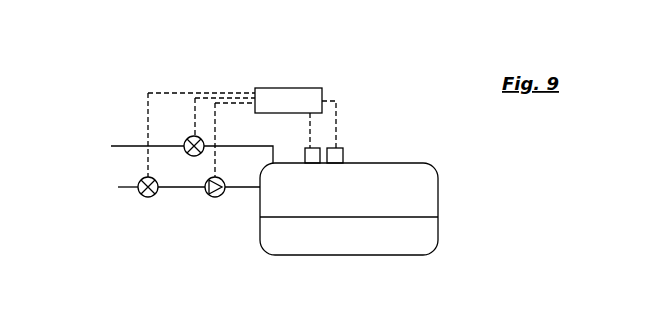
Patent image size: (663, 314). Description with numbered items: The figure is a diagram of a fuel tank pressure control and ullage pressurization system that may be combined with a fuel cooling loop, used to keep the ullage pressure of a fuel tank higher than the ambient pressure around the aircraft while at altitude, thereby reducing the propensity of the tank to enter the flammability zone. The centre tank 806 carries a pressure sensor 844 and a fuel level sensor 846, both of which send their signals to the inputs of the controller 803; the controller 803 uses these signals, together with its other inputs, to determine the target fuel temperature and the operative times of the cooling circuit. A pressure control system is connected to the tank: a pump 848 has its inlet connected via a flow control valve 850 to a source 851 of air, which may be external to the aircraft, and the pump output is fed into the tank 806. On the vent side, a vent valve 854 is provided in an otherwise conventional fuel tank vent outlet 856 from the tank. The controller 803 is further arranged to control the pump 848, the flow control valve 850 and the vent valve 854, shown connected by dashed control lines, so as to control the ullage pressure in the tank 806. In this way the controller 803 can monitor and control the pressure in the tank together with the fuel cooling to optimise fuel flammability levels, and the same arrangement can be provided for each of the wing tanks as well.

The controller 803 is at (285, 88).
The centre tank 806 is at (438, 190).
The pressure sensor 844 is at (343, 151).
The fuel level sensor 846 is at (317, 147).
The pump 848 is at (210, 197).
The flow control valve 850 is at (142, 196).
The source of air 851 is at (130, 187).
The vent valve 854 is at (186, 140).
The fuel tank vent outlet 856 is at (169, 134).